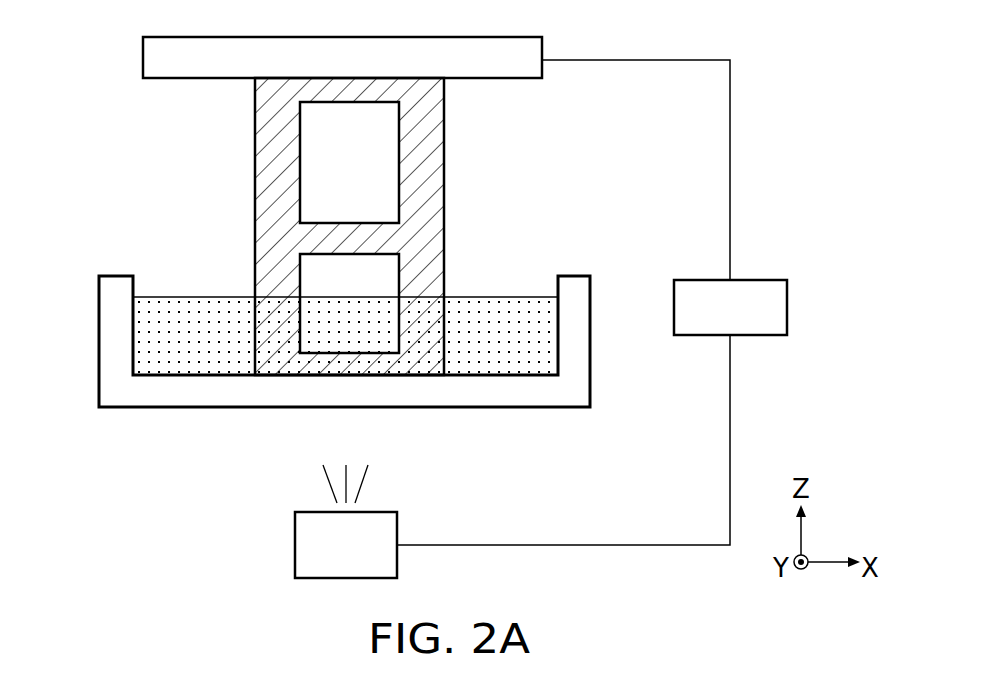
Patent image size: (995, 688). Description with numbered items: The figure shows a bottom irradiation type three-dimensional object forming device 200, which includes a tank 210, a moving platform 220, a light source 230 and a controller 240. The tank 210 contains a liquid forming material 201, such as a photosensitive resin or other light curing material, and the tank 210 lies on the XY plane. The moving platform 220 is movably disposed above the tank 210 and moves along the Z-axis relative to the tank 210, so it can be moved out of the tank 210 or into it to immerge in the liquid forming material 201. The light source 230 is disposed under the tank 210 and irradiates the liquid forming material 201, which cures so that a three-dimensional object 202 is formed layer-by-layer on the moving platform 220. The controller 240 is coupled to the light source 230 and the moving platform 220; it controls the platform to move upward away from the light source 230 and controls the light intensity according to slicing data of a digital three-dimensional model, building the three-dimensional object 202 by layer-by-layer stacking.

The 3D object forming device 200 is at (759, 40).
The liquid forming material 201 is at (525, 312).
The 3D object 202 is at (420, 134).
The tank 210 is at (527, 408).
The moving platform 220 is at (542, 50).
The light source 230 is at (397, 560).
The controller 240 is at (787, 308).